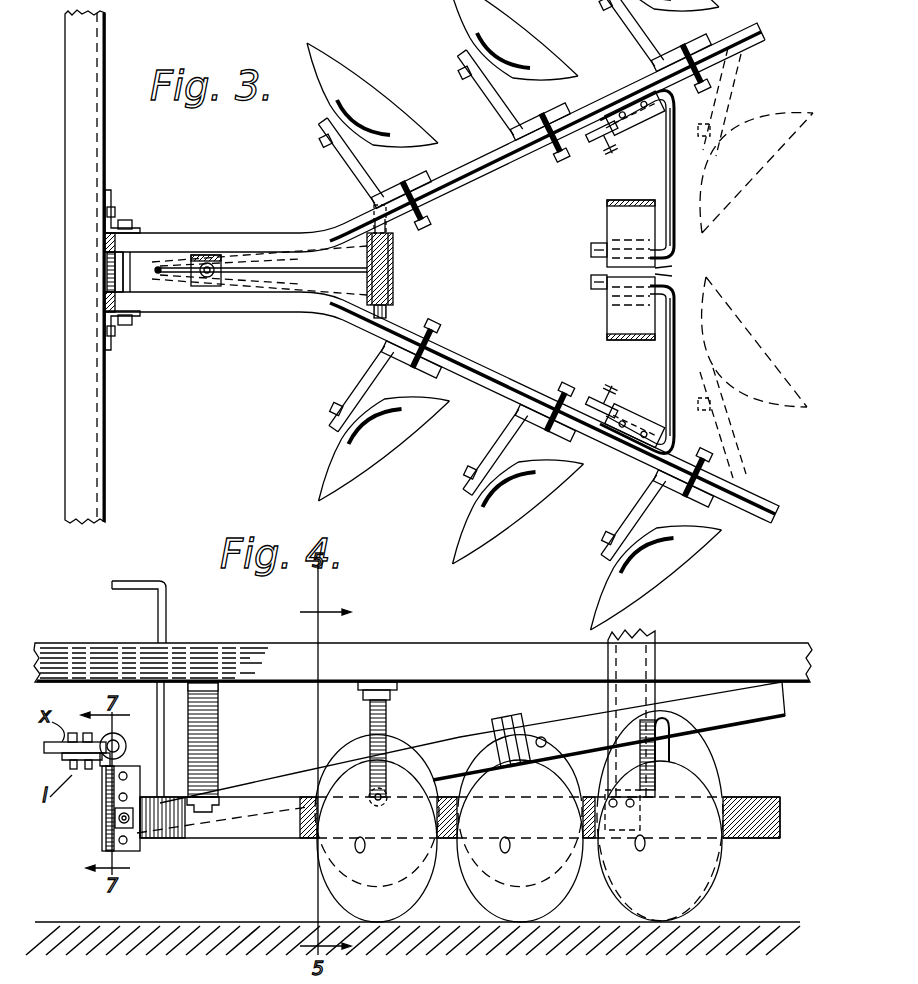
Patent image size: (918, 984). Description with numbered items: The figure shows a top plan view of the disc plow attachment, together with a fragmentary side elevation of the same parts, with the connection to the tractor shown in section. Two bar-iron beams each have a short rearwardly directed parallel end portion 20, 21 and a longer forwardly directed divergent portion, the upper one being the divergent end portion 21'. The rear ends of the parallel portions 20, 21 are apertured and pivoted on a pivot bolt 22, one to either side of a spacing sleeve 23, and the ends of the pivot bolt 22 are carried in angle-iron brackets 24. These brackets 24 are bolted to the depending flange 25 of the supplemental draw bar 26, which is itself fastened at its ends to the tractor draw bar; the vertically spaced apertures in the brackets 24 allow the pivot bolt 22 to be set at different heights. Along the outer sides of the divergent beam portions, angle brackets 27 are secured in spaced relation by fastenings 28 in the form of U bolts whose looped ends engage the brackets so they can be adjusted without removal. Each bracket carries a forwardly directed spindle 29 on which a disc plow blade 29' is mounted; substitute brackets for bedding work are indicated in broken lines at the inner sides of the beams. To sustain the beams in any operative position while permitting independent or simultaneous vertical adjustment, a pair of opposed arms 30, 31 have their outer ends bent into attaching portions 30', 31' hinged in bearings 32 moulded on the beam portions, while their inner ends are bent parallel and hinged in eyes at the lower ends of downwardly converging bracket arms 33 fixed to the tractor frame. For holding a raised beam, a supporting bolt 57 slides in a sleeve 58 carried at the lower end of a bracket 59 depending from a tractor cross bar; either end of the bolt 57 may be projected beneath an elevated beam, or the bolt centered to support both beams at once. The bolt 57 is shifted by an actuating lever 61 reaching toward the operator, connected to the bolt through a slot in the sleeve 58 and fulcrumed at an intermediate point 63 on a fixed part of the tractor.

In FIG. 3, the rearwardly directed parallel end portion 20 is at (200, 300).
In FIG. 4, the rearwardly directed parallel end portion 20 is at (192, 838).
In FIG. 3, the rearwardly directed parallel end portion 21 is at (224, 228).
In FIG. 4, the forwardly directed divergent end portion 21' is at (472, 742).
In FIG. 3, the pivot member or bolt 22 is at (122, 322).
In FIG. 4, the pivot member or bolt 22 is at (102, 845).
In FIG. 3, the spacing member or sleeve 23 is at (135, 257).
In FIG. 3, the bracket 24 is at (108, 202).
In FIG. 4, the bracket 24 is at (112, 815).
In FIG. 4, the depending flange 25 is at (98, 790).
In FIG. 3, the supplemental draw bar 26 is at (99, 435).
In FIG. 4, the supplemental draw bar 26 is at (70, 760).
In FIG. 3, the angle bracket 27 is at (493, 104).
In FIG. 3, the fastening 28 is at (430, 356).
In FIG. 4, the fastening 28 is at (540, 722).
In FIG. 3, the spindle 29 is at (555, 284).
In FIG. 4, the spindle 29 is at (519, 816).
In FIG. 4, the disc plow blade 29' is at (519, 841).
In FIG. 3, the member or arm 30 is at (637, 369).
In FIG. 4, the attaching portion 30' is at (663, 750).
In FIG. 3, the member or arm 31 is at (637, 174).
In FIG. 4, the member or arm 31 is at (677, 740).
In FIG. 4, the attaching portion 31' is at (557, 746).
In FIG. 3, the member or bearing 32 is at (624, 415).
In FIG. 3, the bracket arm 33 is at (610, 204).
In FIG. 3, the supporting member or bolt 57 is at (390, 318).
In FIG. 3, the member or sleeve 58 is at (394, 291).
In FIG. 3, the bracket 59 is at (395, 263).
In FIG. 4, the bracket 59 is at (370, 748).
In FIG. 3, the actuating lever 61 is at (285, 272).
In FIG. 4, the actuating lever 61 is at (142, 588).
In FIG. 3, the fulcrum 63 is at (210, 288).
In FIG. 4, the fulcrum 63 is at (210, 797).